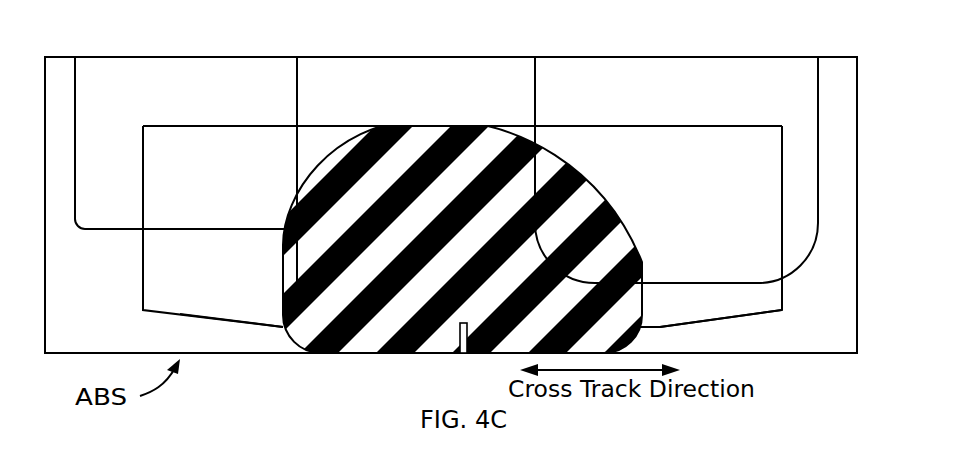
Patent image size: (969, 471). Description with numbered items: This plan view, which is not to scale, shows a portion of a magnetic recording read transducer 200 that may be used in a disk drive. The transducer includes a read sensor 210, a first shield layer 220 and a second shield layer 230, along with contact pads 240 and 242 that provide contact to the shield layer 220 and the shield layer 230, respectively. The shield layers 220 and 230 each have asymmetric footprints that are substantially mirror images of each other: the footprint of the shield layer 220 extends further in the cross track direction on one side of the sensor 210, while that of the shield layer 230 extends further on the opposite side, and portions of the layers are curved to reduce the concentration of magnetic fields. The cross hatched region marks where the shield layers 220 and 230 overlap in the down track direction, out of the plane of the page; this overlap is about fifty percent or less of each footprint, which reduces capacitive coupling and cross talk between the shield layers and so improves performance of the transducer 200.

The magnetic recording read transducer 200 is at (131, 34).
The contact pad 242 is at (198, 197).
The contact pad 240 is at (692, 197).
The second shield layer 230 is at (222, 322).
The first shield layer 220 is at (732, 317).
The read sensor 210 is at (462, 353).